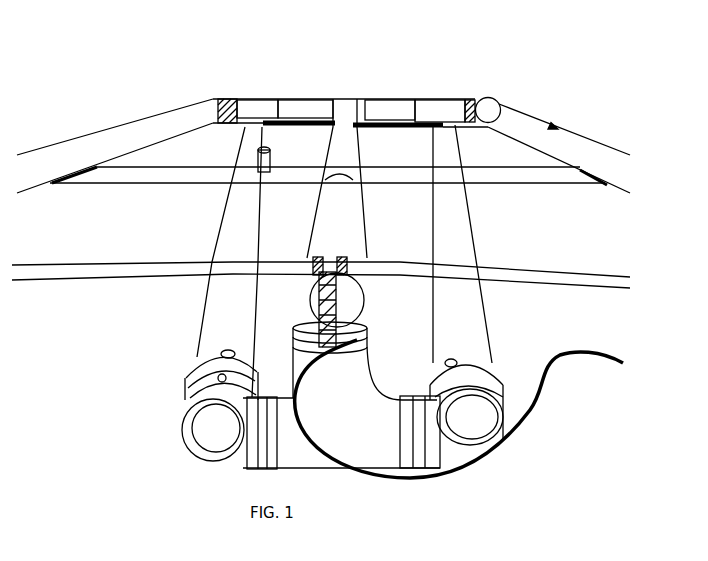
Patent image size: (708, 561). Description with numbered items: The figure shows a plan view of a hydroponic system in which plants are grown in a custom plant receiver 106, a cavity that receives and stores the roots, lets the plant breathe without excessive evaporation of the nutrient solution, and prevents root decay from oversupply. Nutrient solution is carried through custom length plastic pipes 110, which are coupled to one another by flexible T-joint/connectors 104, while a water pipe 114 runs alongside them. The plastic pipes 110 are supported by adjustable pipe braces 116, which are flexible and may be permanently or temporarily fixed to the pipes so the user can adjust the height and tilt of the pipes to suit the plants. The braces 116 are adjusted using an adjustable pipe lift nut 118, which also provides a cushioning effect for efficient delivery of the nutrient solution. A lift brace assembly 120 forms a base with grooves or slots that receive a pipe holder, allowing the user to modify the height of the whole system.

The flexible T-joint/connector 104 is at (447, 108).
The custom plant receiver 106 is at (123, 131).
The custom length plastic pipe 110 is at (553, 148).
The water pipe 114 is at (159, 272).
The adjustable pipe brace 116 is at (195, 167).
The adjustable pipe lift nut 118 is at (360, 177).
The lift brace assembly 120 is at (498, 105).